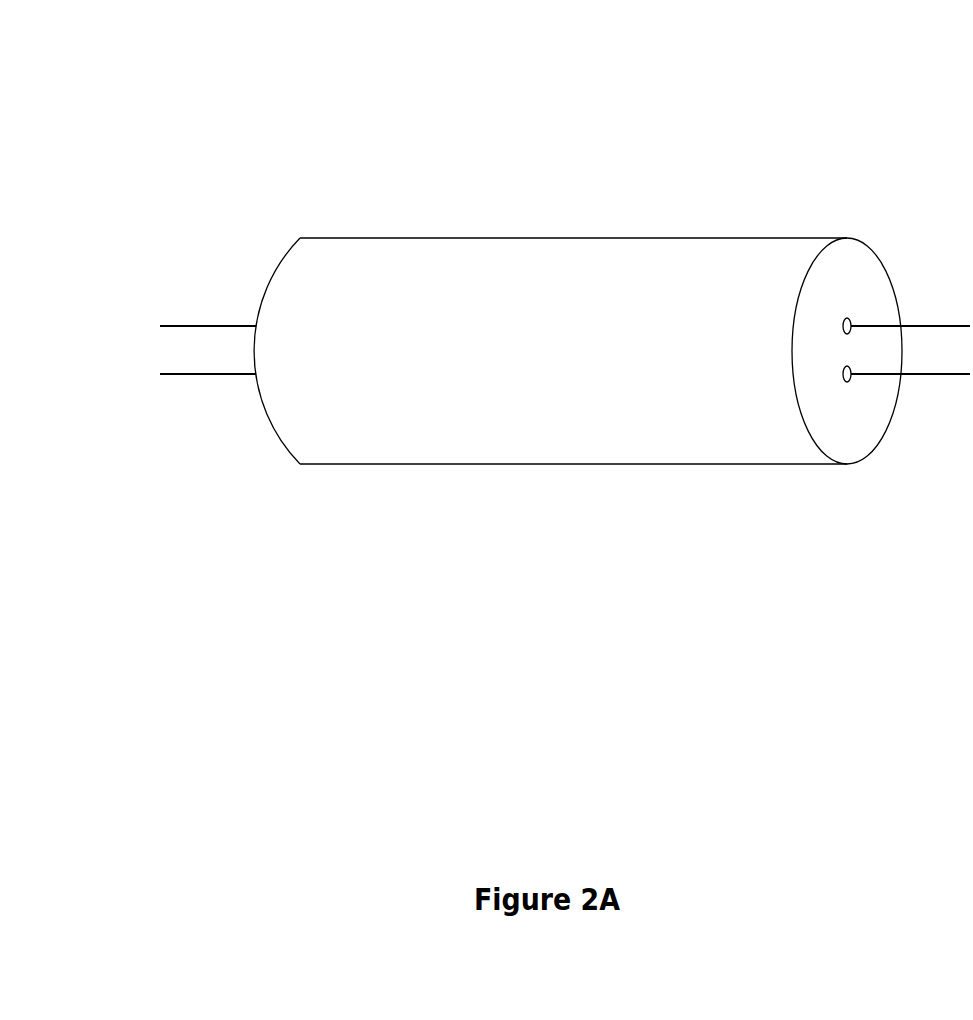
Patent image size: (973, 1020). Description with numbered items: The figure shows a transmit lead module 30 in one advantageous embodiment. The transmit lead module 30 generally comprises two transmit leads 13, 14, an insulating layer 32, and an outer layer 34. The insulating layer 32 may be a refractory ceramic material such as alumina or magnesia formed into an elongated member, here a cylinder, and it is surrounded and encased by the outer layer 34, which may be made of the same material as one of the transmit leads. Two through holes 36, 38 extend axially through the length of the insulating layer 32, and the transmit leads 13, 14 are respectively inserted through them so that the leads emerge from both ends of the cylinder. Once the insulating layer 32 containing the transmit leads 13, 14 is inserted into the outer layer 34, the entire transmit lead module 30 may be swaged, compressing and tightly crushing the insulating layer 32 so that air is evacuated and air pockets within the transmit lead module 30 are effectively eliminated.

The transmit lead module 30 is at (732, 87).
The insulating layer 32 is at (848, 440).
The outer layer 34 is at (540, 447).
The through hole 36 is at (840, 330).
The through hole 38 is at (840, 380).
The transmit lead 13 is at (195, 326).
The transmit lead 14 is at (196, 374).